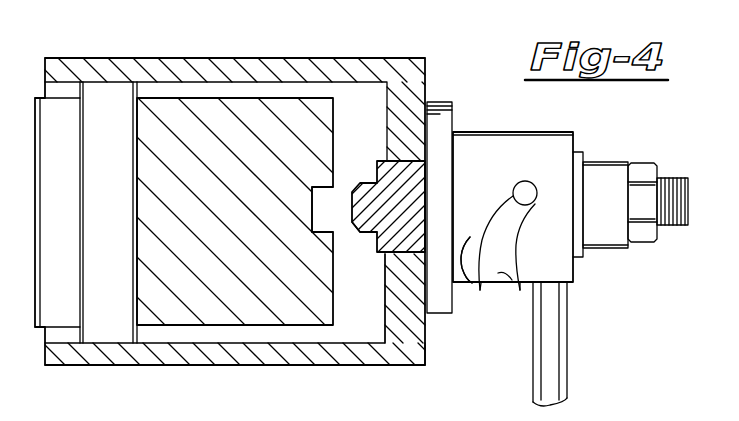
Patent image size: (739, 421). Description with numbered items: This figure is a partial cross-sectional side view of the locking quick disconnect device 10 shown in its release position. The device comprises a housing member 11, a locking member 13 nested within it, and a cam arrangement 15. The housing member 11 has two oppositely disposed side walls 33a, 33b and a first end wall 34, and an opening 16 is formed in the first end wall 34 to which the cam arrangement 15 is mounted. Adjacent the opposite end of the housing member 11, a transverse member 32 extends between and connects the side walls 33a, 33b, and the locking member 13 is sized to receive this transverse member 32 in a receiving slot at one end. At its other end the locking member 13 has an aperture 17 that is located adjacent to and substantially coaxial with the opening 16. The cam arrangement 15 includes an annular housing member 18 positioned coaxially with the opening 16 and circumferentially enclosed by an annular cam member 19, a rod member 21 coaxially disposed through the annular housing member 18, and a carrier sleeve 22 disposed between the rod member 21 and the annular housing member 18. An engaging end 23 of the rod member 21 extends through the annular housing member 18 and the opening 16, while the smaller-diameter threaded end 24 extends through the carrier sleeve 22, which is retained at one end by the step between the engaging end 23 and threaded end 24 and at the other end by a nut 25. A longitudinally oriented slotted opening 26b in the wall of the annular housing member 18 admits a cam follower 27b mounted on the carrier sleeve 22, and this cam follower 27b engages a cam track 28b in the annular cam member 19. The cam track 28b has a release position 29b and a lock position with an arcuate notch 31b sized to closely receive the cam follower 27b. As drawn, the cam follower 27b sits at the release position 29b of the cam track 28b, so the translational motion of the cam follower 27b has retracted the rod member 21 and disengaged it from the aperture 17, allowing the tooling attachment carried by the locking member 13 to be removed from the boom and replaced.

The locking quick disconnect device 10 is at (480, 28).
The housing member 11 is at (88, 58).
The locking member 13 is at (215, 234).
The cam arrangement 15 is at (632, 110).
The opening 16 is at (388, 256).
The aperture 17 is at (313, 213).
The annular housing member 18 is at (446, 100).
The annular cam member 19 is at (575, 112).
The rod member 21 is at (410, 185).
The carrier sleeve 22 is at (605, 172).
The engaging end 23 is at (366, 234).
The threaded end 24 is at (672, 220).
The nut 25 is at (645, 240).
The slotted opening 26b is at (513, 196).
The cam follower 27b is at (535, 204).
The cam track 28b is at (482, 288).
The release position 29b is at (517, 283).
The arcuate notch 31b is at (503, 283).
The transverse member 32 is at (103, 98).
The side wall 33a is at (174, 363).
The side wall 33b is at (222, 62).
The first end wall 34 is at (427, 348).